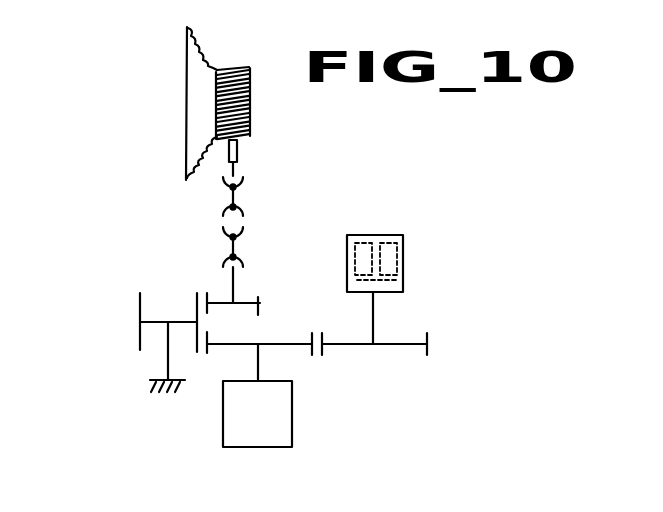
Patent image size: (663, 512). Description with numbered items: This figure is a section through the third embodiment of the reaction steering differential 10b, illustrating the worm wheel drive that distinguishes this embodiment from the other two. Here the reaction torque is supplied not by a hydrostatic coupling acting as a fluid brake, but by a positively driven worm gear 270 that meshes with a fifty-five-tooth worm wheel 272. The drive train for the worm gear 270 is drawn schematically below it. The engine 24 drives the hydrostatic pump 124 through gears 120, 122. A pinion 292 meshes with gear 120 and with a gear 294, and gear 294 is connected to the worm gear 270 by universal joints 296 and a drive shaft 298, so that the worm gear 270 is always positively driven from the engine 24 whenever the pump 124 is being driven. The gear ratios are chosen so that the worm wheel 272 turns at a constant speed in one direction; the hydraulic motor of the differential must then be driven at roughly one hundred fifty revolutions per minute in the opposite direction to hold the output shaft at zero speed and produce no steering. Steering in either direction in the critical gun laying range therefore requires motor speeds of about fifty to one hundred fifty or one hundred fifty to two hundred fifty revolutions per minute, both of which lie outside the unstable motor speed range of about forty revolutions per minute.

The reaction steering differential 10b is at (160, 104).
The worm wheel 272 is at (199, 48).
The worm gear 270 is at (251, 105).
The drive shaft 298 is at (243, 213).
The universal joints 296 is at (236, 247).
The gear 294 is at (212, 298).
The pinion 292 is at (140, 308).
The gear 120 is at (278, 347).
The gear 122 is at (396, 350).
The hydrostatic pump 124 is at (403, 263).
The engine 24 is at (292, 425).